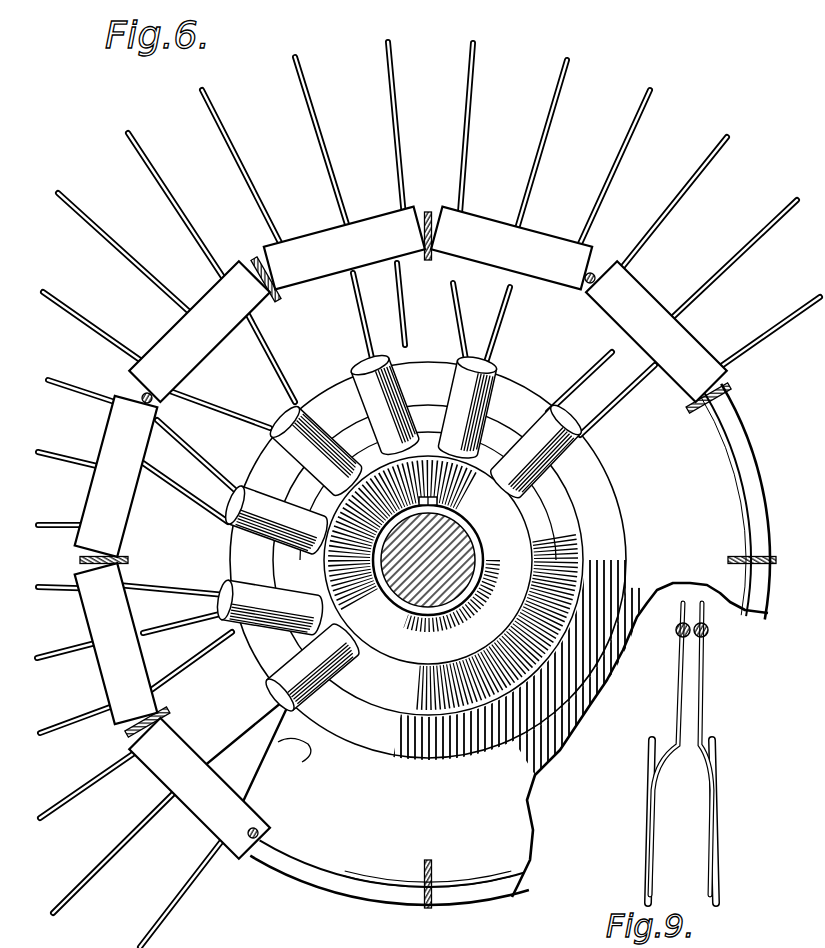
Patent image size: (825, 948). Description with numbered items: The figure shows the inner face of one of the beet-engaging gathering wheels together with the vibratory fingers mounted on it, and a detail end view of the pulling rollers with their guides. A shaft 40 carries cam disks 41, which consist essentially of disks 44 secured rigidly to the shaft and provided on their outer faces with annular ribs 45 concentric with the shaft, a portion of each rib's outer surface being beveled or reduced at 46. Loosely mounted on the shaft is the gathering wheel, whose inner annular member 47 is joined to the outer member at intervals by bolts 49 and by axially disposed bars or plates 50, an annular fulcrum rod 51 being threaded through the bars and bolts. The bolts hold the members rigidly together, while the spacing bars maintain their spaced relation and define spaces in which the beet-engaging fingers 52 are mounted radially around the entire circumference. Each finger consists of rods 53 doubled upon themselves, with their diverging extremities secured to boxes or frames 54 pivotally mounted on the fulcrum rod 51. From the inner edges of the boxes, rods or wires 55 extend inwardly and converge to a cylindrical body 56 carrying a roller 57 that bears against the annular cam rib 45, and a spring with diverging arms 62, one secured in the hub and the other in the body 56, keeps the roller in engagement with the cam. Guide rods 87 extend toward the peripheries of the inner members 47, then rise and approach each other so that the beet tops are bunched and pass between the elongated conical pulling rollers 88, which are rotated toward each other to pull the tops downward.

In FIG. 6, the shaft 40 is at (455, 520).
In FIG. 6, the cam disks 41 is at (468, 548).
In FIG. 6, the disks 44 is at (437, 568).
In FIG. 6, the annular ribs 45 is at (428, 560).
In FIG. 6, the beveled or reduced portion 46 is at (480, 655).
In FIG. 6, the inner annular member 47 is at (510, 644).
In FIG. 6, the bolts 49 is at (602, 278).
In FIG. 6, the axially disposed bars or plates 50 is at (165, 715).
In FIG. 6, the annular fulcrum rod 51 is at (270, 295).
In FIG. 6, the beet-engaging fingers 52 is at (428, 477).
In FIG. 6, the rods 53 is at (163, 918).
In FIG. 6, the boxes or frames 54 is at (199, 331).
In FIG. 6, the rods or wires 55 is at (296, 755).
In FIG. 6, the cylindrical body 56 is at (316, 702).
In FIG. 6, the roller 57 is at (342, 668).
In FIG. 6, the arms 62 is at (250, 735).
In FIG. 9, the guide rods 87 is at (706, 868).
In FIG. 9, the pulling rollers 88 is at (705, 637).